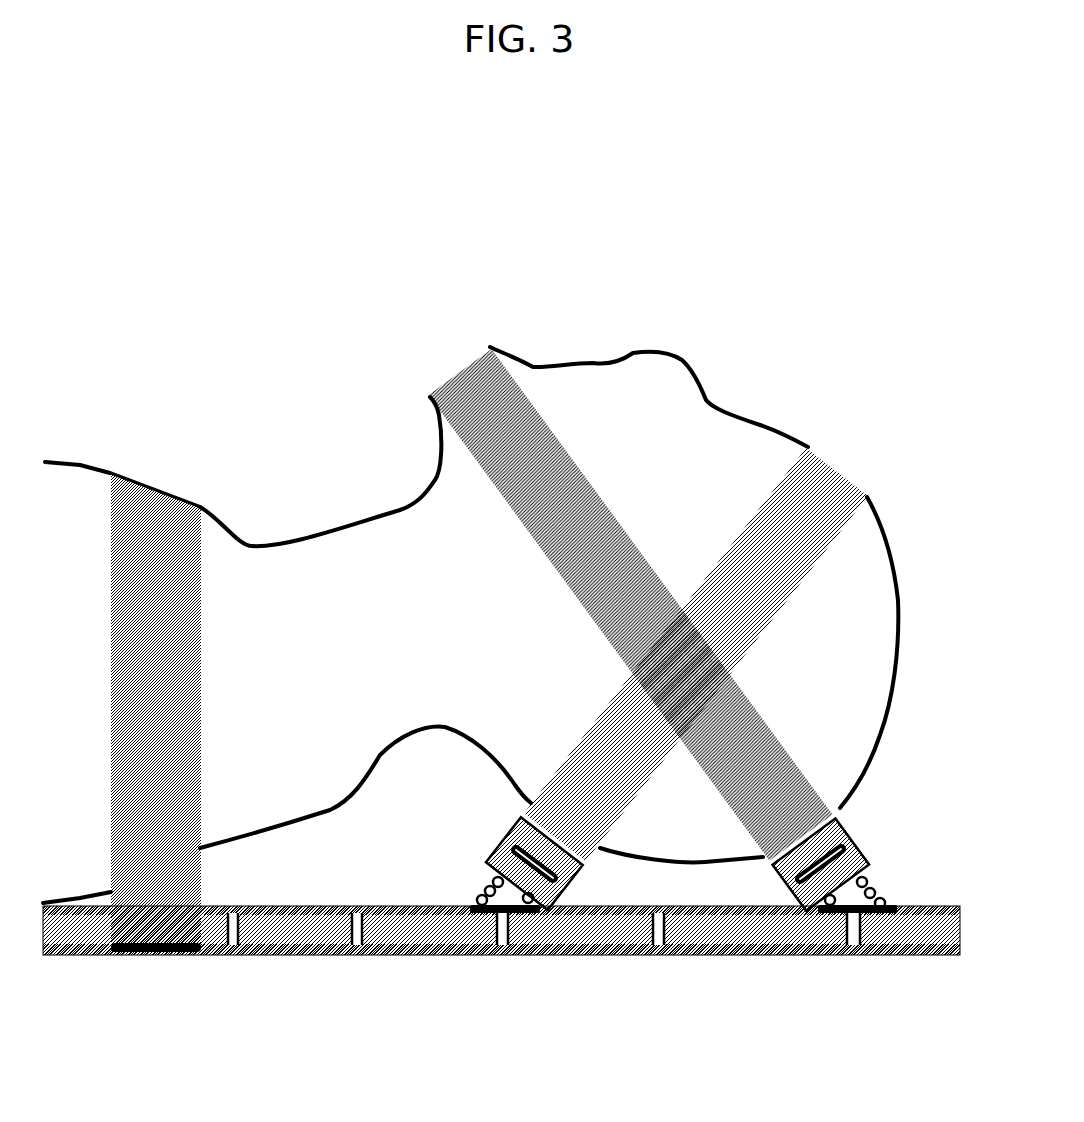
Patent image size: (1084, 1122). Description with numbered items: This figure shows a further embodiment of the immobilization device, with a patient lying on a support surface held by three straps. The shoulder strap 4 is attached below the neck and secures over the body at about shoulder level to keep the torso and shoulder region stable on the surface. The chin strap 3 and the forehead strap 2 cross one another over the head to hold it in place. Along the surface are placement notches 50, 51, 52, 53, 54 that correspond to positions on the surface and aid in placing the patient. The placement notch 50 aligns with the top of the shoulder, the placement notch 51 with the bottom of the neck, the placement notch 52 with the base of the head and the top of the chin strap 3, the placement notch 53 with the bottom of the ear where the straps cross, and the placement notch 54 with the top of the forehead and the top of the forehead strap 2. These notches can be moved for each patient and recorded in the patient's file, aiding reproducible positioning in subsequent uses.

The forehead strap 2 is at (856, 461).
The chin strap 3 is at (448, 359).
The shoulder strap 4 is at (161, 475).
The placement notch 50 is at (232, 955).
The placement notch 51 is at (356, 955).
The placement notch 52 is at (501, 955).
The placement notch 53 is at (657, 955).
The placement notch 54 is at (852, 955).